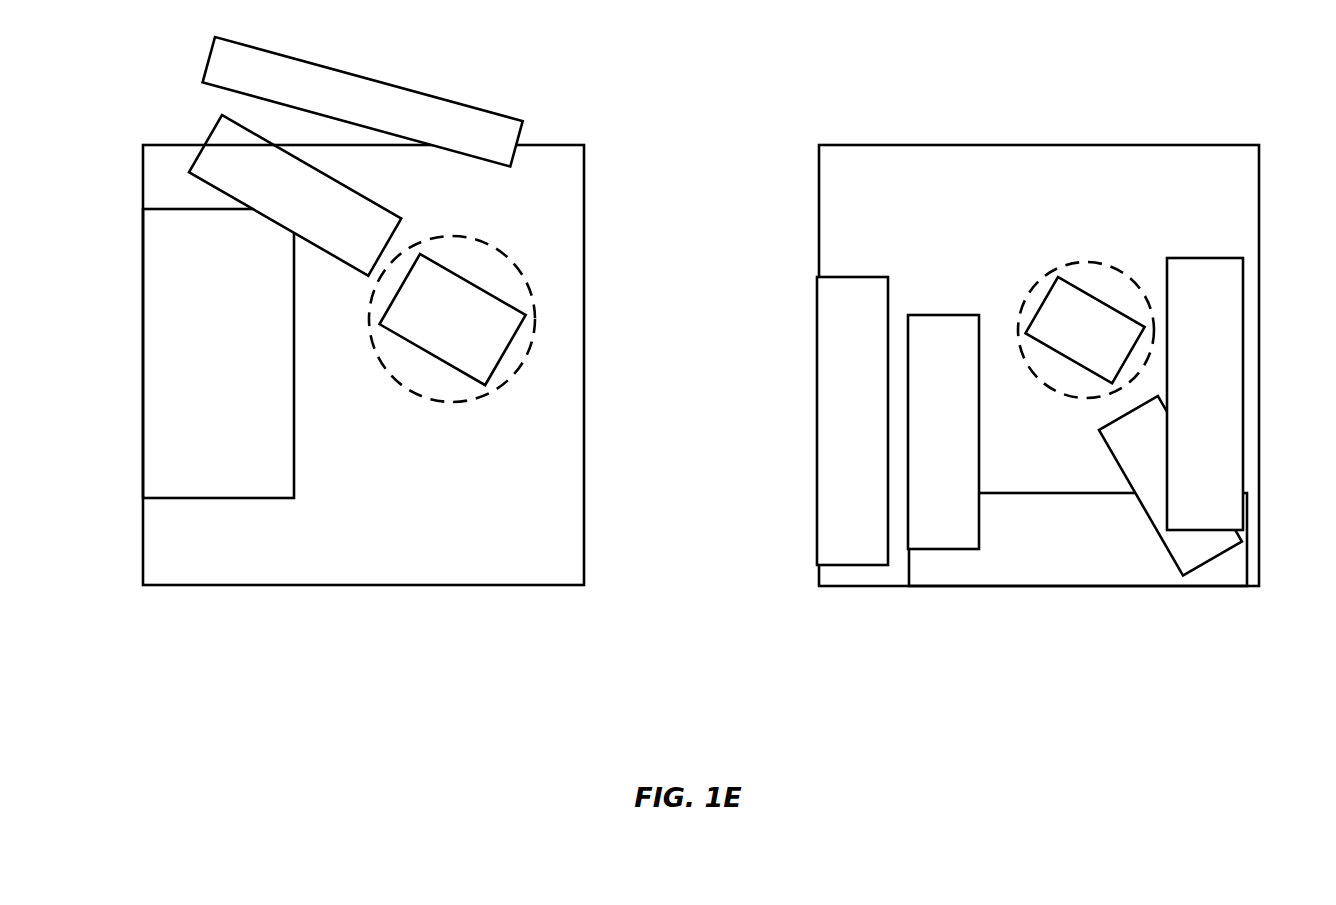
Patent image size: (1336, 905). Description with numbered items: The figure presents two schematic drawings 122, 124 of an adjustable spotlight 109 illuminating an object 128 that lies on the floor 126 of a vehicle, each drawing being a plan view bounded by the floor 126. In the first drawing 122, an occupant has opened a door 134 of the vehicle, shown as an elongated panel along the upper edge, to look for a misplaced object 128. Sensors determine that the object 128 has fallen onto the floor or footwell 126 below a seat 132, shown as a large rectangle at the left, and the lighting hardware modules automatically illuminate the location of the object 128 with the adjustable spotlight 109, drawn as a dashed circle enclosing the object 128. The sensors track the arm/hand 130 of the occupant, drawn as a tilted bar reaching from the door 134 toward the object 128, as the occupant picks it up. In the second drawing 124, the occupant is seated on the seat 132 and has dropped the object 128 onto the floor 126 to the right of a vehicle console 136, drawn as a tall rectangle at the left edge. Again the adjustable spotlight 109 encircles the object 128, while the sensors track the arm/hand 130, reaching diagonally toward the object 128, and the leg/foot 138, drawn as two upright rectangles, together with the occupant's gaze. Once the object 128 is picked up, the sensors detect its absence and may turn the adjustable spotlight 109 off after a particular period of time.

The adjustable spotlight 109 is at (438, 401).
The schematic drawing 122 is at (248, 588).
The schematic drawing 124 is at (872, 587).
The floor 126 is at (341, 571).
The object 128 is at (464, 305).
The arm/hand 130 is at (308, 159).
The seat 132 is at (201, 364).
The door 134 is at (357, 71).
The vehicle console 136 is at (835, 433).
The leg/foot 138 is at (928, 444).